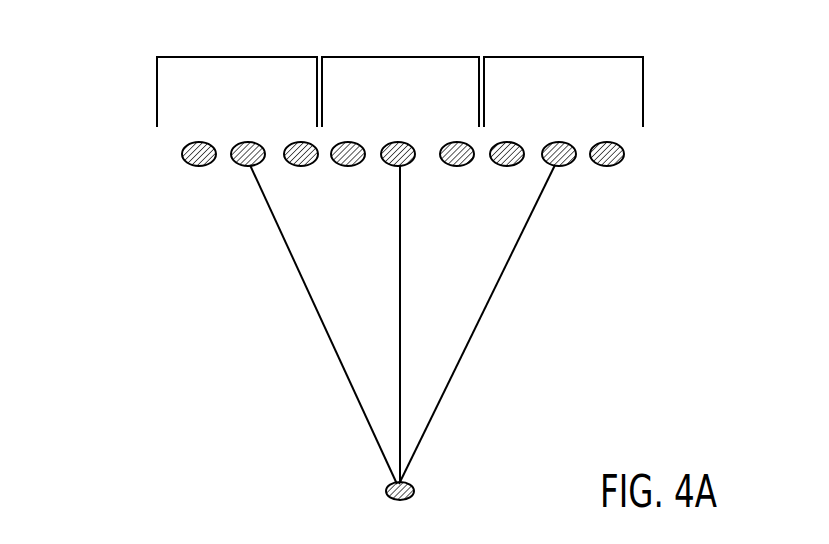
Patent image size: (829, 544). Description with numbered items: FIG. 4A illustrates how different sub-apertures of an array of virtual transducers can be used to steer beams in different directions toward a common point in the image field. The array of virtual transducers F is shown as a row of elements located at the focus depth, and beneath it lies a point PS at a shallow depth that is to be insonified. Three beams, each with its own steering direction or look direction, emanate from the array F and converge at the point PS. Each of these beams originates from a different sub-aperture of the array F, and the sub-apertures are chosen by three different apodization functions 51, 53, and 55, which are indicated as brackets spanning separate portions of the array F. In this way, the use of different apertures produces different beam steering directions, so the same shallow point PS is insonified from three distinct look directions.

The apodization function 51 is at (225, 62).
The apodization function 53 is at (377, 62).
The apodization function 55 is at (550, 62).
The array of virtual transducers F is at (145, 157).
The point at a shallow depth PS is at (386, 494).